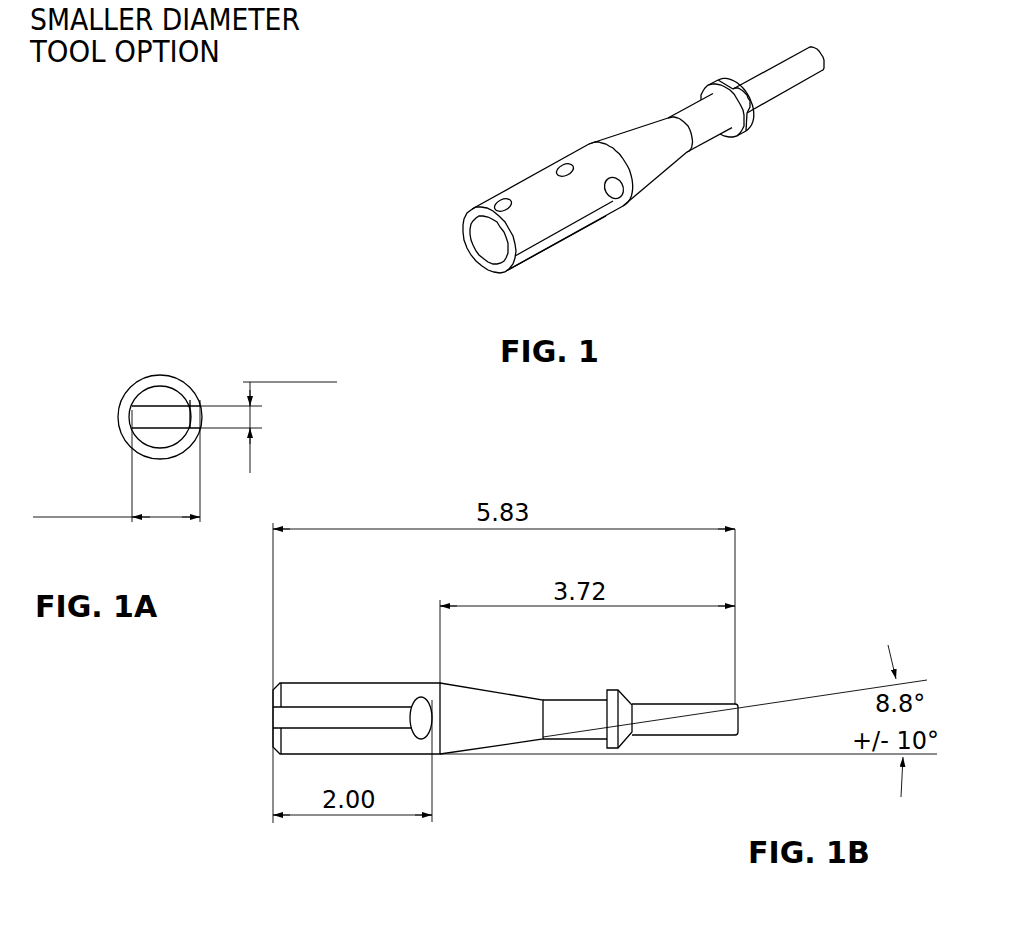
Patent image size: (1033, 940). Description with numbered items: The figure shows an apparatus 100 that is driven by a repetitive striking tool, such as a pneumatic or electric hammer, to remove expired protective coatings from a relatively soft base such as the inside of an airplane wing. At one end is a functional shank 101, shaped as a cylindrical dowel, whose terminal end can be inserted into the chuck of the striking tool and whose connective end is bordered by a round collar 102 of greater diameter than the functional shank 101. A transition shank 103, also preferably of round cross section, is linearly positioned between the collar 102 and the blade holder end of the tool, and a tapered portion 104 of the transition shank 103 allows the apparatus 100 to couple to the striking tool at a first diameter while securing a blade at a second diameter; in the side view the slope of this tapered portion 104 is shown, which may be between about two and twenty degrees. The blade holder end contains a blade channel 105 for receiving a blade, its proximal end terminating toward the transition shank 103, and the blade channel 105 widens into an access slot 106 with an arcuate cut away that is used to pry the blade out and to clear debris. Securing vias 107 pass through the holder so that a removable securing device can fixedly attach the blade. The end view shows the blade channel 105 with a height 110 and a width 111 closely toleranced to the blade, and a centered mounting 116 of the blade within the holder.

In FIG. 1, the apparatus 100 is at (522, 42).
In FIG. 1, the functional shank 101 is at (781, 56).
In FIG. 1B, the functional shank 101 is at (683, 736).
In FIG. 1, the collar 102 is at (749, 121).
In FIG. 1B, the collar 102 is at (613, 749).
In FIG. 1, the transition shank 103 is at (689, 104).
In FIG. 1B, the transition shank 103 is at (576, 740).
In FIG. 1, the tapered portion 104 is at (667, 171).
In FIG. 1B, the tapered portion 104 is at (491, 748).
In FIG. 1, the blade channel 105 is at (553, 237).
In FIG. 1A, the blade channel 105 is at (158, 415).
In FIG. 1B, the blade channel 105 is at (346, 704).
In FIG. 1, the access slot 106 is at (609, 203).
In FIG. 1B, the access slot 106 is at (420, 704).
In FIG. 1, the securing via 107 is at (559, 171).
In FIG. 1A, the height 110 is at (268, 412).
In FIG. 1A, the width 111 is at (116, 461).
In FIG. 1A, the centered mounting 116 is at (190, 399).